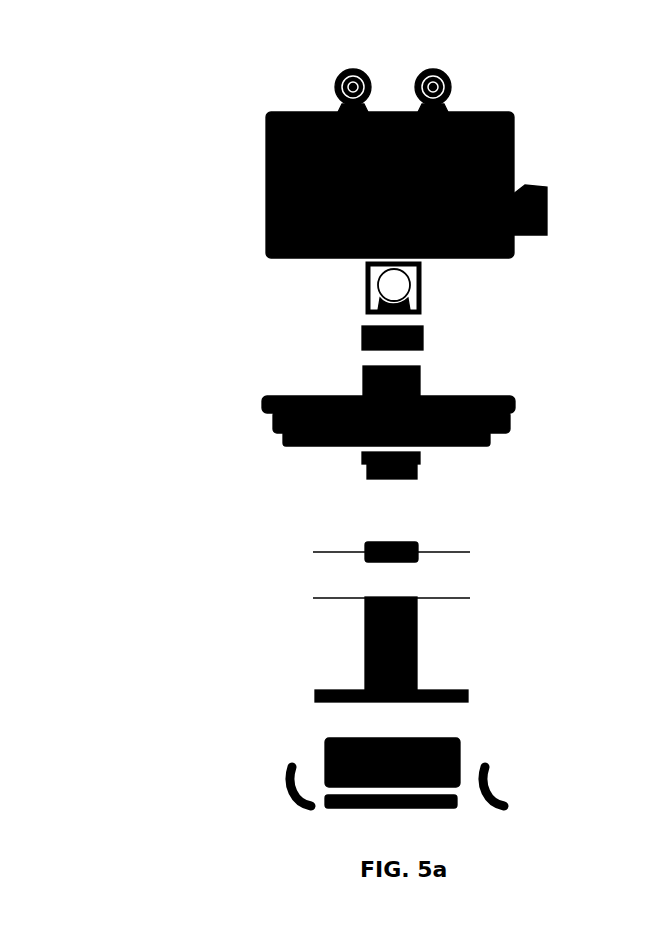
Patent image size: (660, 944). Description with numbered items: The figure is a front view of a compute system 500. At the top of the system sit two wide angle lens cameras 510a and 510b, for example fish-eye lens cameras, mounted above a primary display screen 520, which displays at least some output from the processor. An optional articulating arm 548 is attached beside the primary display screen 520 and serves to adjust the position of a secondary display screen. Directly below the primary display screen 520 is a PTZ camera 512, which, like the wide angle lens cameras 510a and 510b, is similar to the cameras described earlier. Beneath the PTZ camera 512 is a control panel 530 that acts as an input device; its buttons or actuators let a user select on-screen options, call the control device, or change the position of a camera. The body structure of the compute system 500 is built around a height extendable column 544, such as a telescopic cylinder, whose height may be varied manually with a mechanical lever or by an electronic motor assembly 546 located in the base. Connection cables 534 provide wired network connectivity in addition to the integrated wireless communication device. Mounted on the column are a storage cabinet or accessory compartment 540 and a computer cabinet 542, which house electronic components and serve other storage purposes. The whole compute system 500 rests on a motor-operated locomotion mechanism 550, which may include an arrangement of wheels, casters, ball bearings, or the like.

The compute system 500 is at (166, 135).
The wide angle lens camera 510a is at (333, 87).
The wide angle lens camera 510b is at (453, 87).
The primary display screen 520 is at (277, 198).
The articulating arm 548 is at (537, 197).
The PTZ camera 512 is at (388, 292).
The control panel 530 is at (360, 345).
The height extendable column 544 is at (410, 390).
The connection cables 534 is at (283, 440).
The storage cabinet/accessory compartment 540 is at (320, 532).
The computer cabinet 542 is at (457, 575).
The electronic motor assembly 546 is at (443, 758).
The motor-operated locomotion mechanism 550 is at (290, 793).